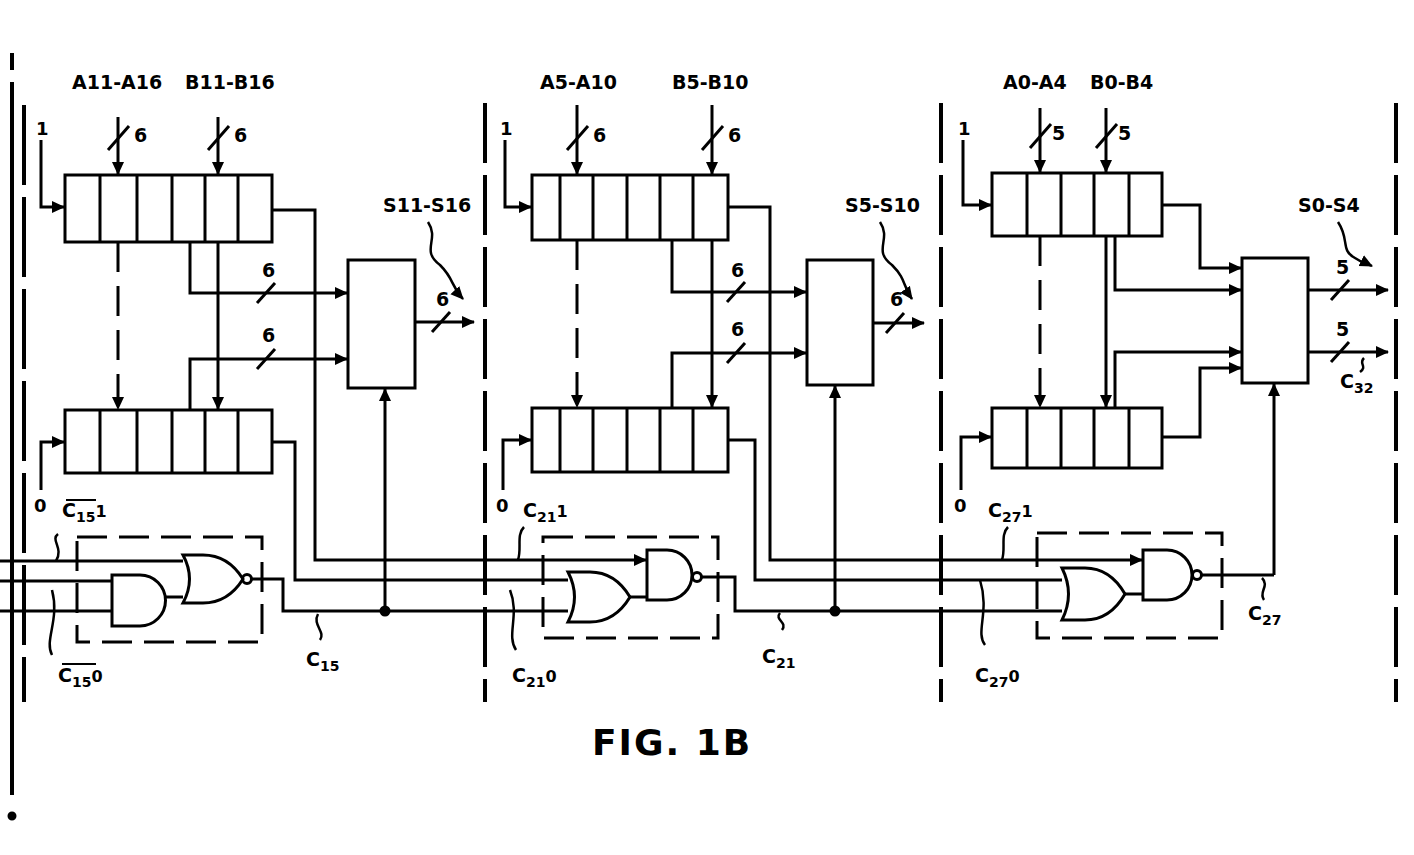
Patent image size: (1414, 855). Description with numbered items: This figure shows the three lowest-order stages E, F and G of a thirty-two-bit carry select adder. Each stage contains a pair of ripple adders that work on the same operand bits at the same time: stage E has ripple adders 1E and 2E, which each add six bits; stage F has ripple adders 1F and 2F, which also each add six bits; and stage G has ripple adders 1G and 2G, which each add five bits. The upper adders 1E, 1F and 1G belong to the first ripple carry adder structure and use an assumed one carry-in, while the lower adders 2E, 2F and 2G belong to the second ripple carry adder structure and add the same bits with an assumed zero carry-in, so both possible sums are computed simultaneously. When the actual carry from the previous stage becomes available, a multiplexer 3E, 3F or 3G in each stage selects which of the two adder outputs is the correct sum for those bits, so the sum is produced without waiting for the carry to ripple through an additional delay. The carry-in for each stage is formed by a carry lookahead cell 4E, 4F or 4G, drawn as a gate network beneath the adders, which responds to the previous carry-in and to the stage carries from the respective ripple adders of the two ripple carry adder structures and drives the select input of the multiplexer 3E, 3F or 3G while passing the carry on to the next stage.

The adder stage E is at (368, 116).
The adder stage F is at (832, 116).
The adder stage G is at (1240, 122).
The ripple adder 1E is at (275, 185).
The adder 2E is at (182, 475).
The multiplexer 3E is at (370, 260).
The carry lookahead cell 4E is at (170, 643).
The ripple adder 1F is at (730, 185).
The adder 2F is at (642, 473).
The multiplexer 3F is at (832, 260).
The carry lookahead cell 4F is at (656, 640).
The ripple adder 1G is at (1164, 180).
The adder 2G is at (1110, 468).
The multiplexer 3G is at (1256, 258).
The carry lookahead cell 4G is at (1135, 640).